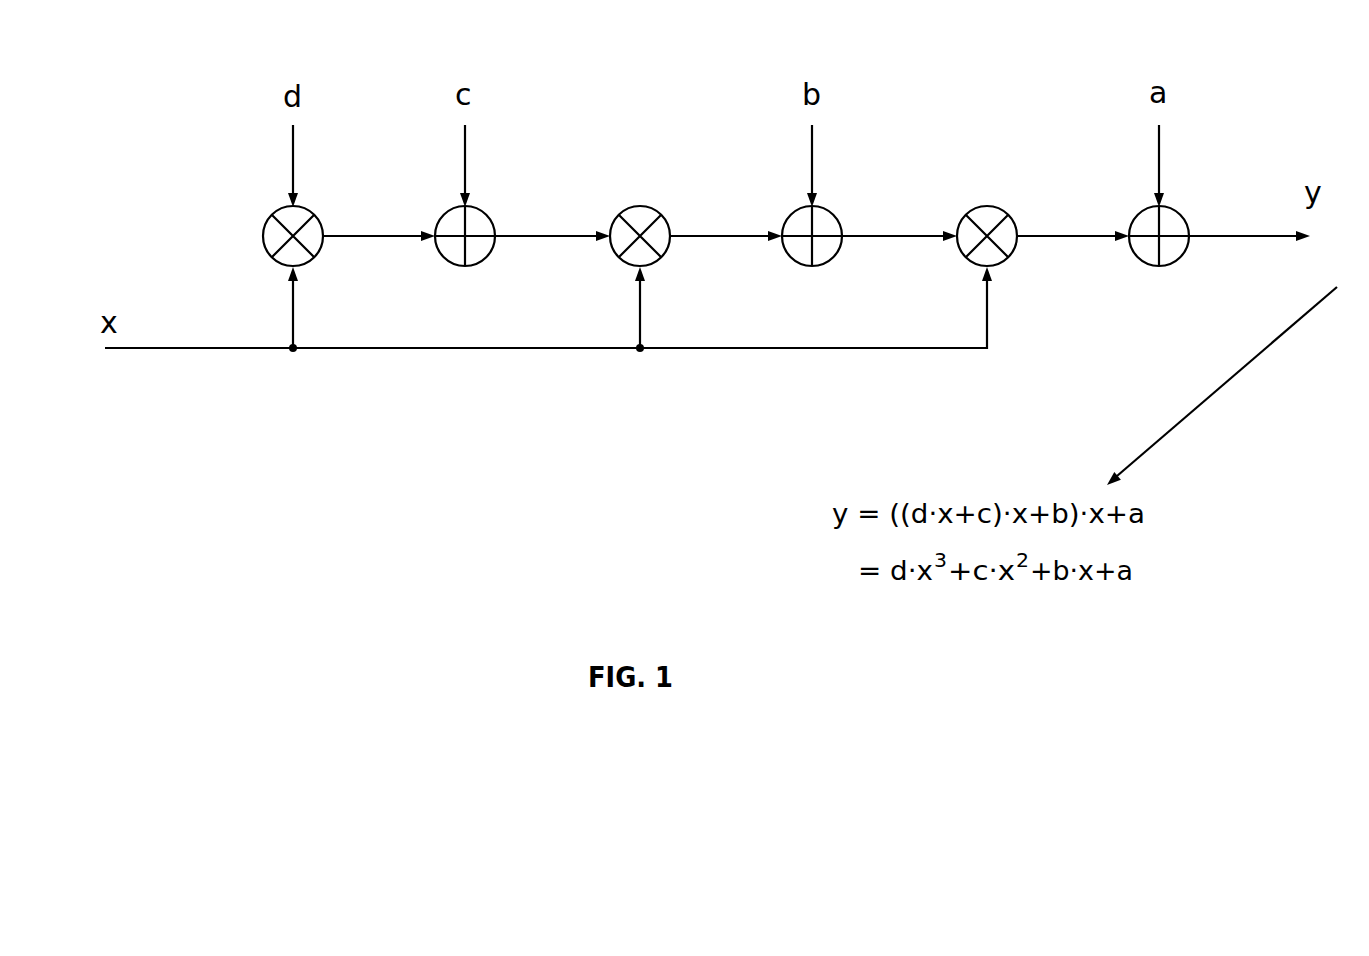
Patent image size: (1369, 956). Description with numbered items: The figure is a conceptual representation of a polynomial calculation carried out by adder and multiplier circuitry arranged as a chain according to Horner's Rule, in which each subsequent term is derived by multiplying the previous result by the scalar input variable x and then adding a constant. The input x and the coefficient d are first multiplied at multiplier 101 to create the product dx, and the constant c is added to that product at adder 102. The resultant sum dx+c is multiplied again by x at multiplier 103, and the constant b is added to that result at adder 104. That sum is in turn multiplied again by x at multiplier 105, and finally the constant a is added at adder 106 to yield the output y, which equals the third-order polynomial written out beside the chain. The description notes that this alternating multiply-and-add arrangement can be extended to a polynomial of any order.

The multiplier 101 is at (281, 208).
The adder 102 is at (451, 208).
The multiplier 103 is at (629, 210).
The adder 104 is at (798, 208).
The multiplier 105 is at (979, 208).
The adder 106 is at (1143, 208).